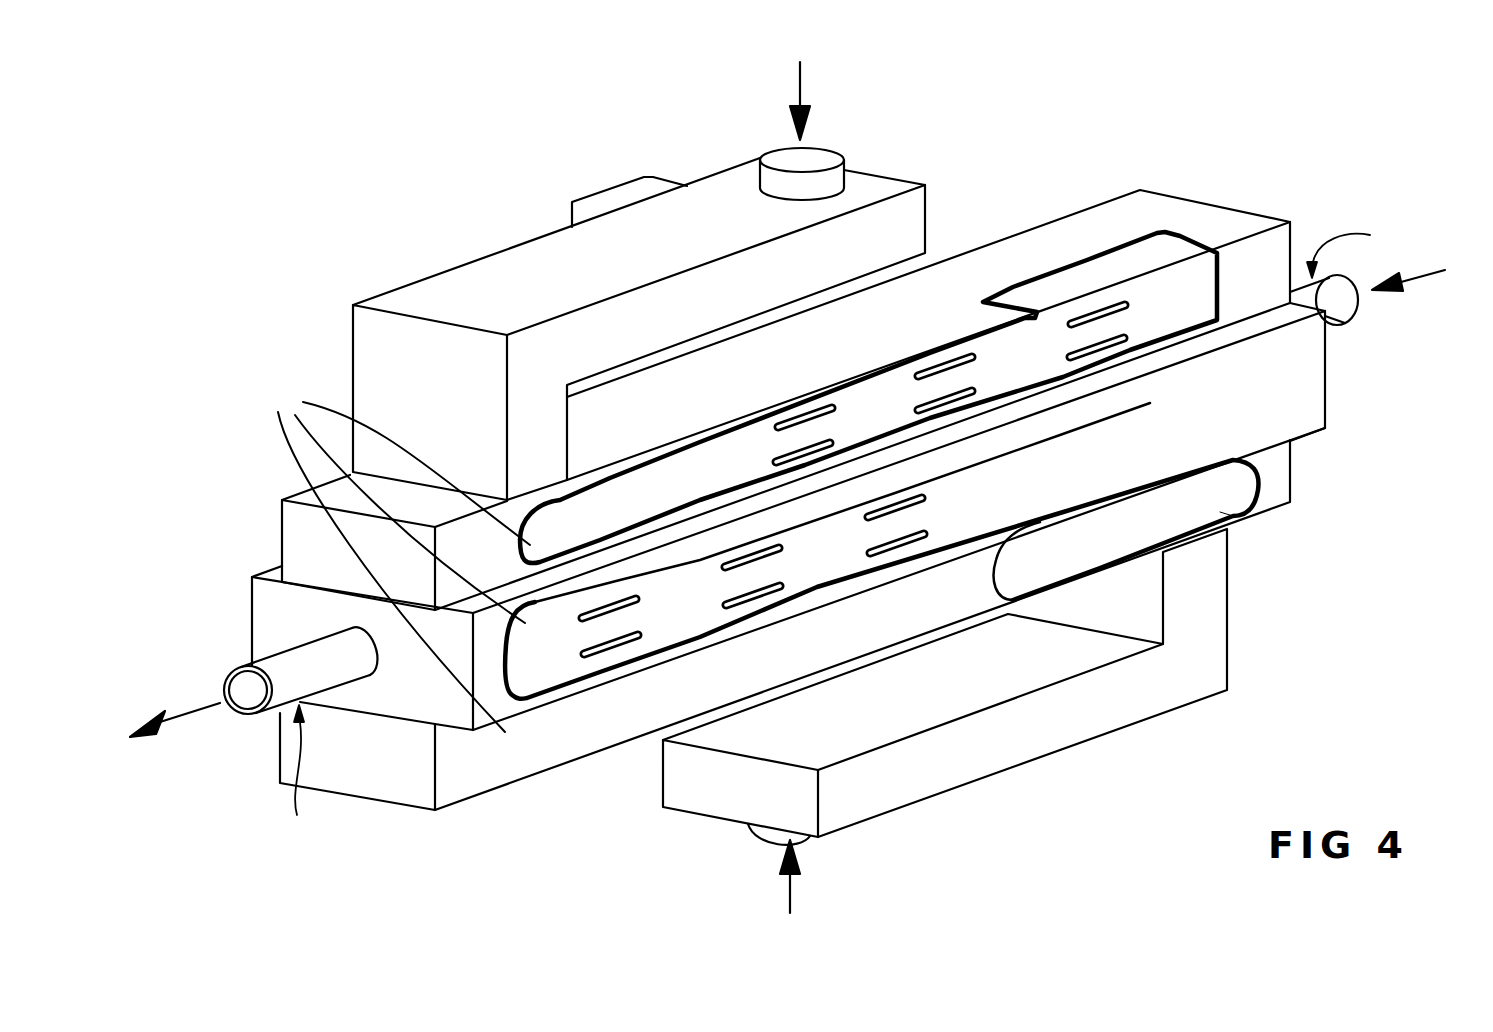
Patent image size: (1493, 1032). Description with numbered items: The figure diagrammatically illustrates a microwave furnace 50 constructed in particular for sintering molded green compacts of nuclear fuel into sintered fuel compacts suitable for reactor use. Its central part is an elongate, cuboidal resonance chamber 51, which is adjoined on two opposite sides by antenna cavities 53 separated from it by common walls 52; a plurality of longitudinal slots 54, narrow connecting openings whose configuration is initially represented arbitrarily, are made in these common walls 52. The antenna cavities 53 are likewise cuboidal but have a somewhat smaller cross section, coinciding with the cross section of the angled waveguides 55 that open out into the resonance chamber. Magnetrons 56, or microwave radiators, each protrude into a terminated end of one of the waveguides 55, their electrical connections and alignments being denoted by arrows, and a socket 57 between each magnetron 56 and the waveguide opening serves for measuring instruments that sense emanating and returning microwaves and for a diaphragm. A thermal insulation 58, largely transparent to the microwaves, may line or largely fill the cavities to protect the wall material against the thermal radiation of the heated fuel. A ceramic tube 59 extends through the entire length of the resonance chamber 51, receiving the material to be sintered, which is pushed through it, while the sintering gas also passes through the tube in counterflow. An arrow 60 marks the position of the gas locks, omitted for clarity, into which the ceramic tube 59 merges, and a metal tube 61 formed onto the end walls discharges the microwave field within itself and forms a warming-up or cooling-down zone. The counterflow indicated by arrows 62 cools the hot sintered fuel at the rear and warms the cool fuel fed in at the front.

The furnace 50 is at (477, 177).
The resonance chamber 51 is at (557, 665).
The common walls 52 is at (1170, 300).
The antenna cavities 53 is at (1040, 297).
The longitudinal slots 54 is at (1093, 310).
The waveguides 55 is at (722, 197).
The magnetrons 56 is at (822, 157).
The socket 57 is at (628, 196).
The thermal insulation 58 is at (397, 555).
The ceramic tube 59 is at (1220, 508).
The arrow 60 is at (846, 533).
The metal tube 61 is at (1352, 318).
The arrows 62 is at (1428, 273).